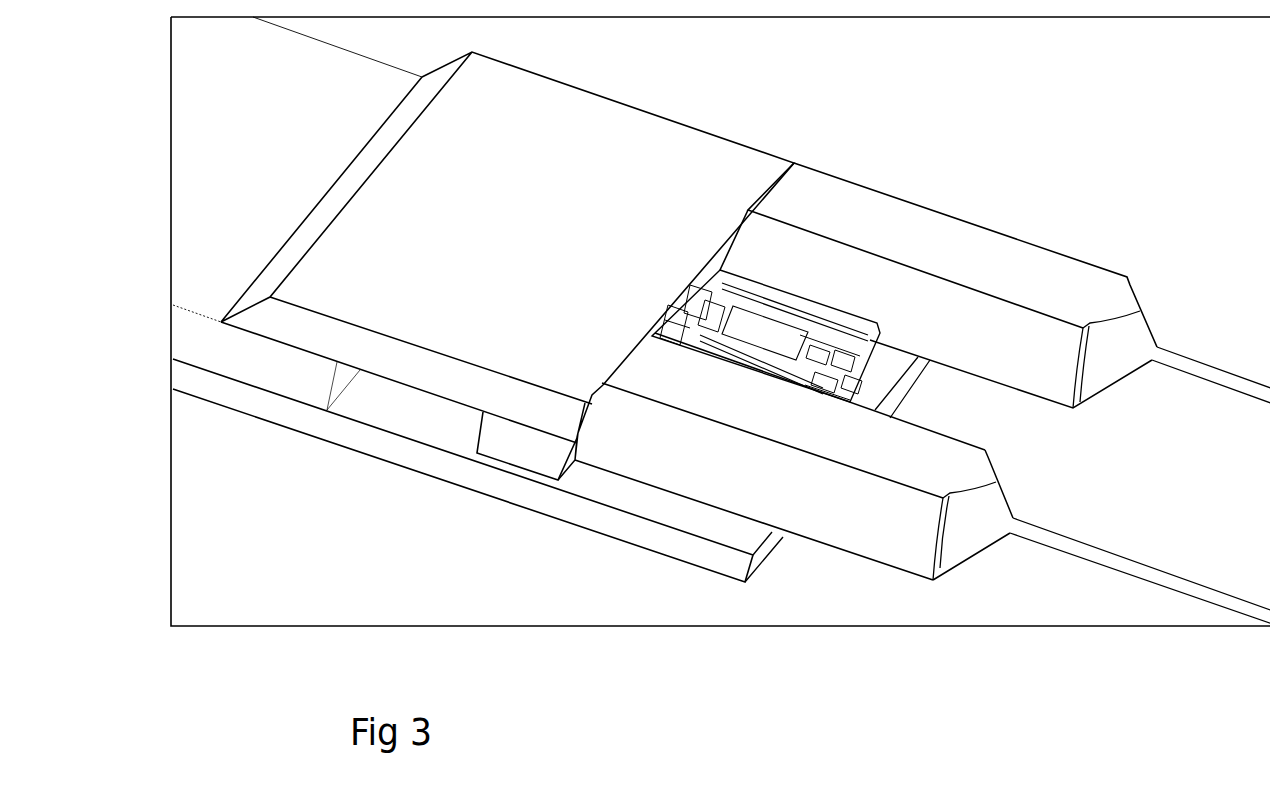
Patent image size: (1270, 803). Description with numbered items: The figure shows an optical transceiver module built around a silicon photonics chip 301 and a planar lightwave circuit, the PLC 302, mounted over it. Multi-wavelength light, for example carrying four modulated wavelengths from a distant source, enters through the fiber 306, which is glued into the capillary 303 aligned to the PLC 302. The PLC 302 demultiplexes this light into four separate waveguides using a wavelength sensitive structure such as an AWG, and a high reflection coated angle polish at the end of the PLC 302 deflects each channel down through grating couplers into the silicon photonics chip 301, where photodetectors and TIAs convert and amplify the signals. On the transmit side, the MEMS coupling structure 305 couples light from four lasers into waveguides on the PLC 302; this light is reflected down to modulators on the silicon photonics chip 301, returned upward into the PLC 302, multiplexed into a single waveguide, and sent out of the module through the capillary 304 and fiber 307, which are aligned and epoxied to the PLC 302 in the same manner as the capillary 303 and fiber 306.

The silicon photonics chip 301 is at (579, 299).
The PLC 302 is at (507, 247).
The capillary 303 is at (938, 285).
The capillary 304 is at (785, 481).
The MEMS coupling structure 305 is at (787, 325).
The fiber 306 is at (1230, 382).
The fiber 307 is at (1105, 558).